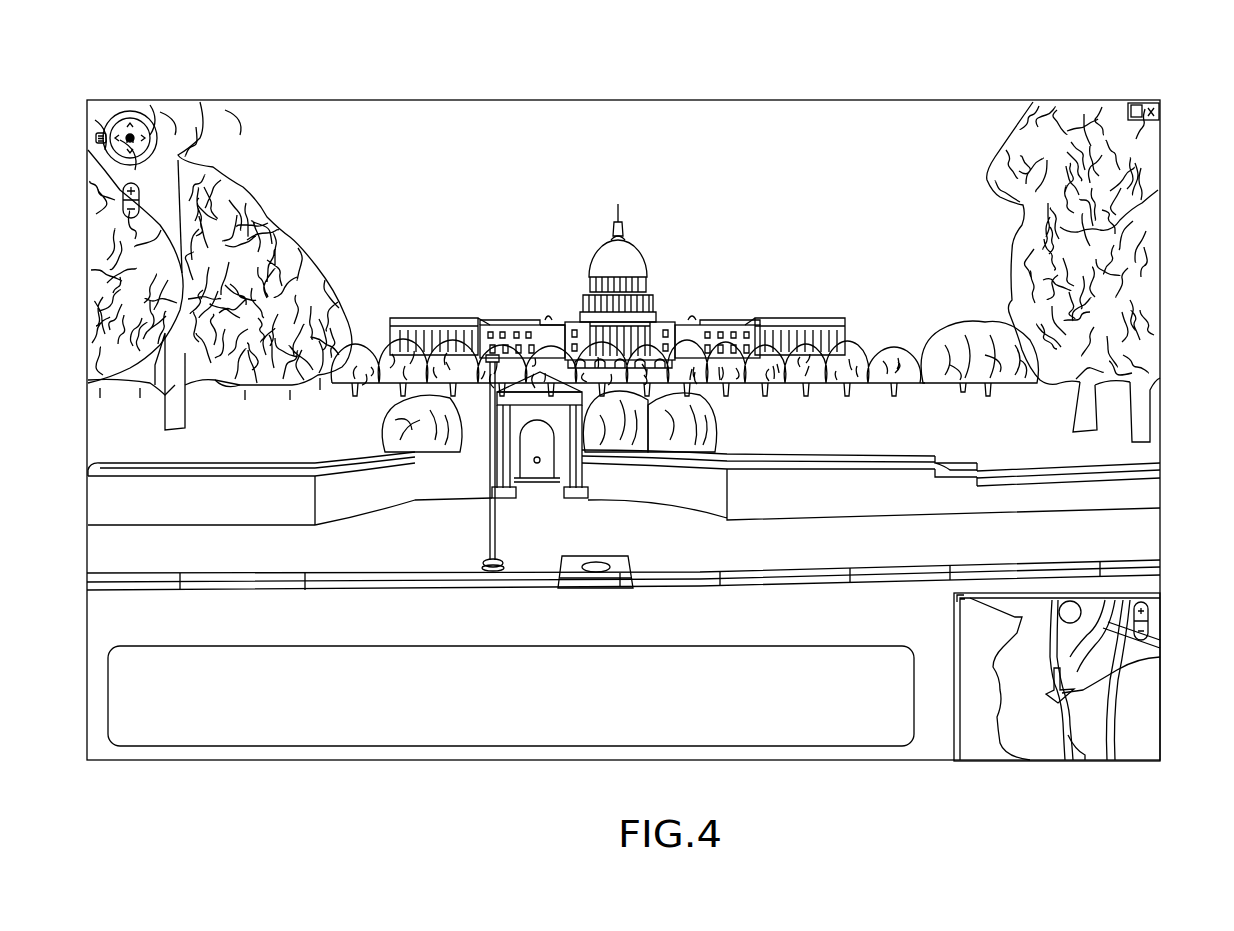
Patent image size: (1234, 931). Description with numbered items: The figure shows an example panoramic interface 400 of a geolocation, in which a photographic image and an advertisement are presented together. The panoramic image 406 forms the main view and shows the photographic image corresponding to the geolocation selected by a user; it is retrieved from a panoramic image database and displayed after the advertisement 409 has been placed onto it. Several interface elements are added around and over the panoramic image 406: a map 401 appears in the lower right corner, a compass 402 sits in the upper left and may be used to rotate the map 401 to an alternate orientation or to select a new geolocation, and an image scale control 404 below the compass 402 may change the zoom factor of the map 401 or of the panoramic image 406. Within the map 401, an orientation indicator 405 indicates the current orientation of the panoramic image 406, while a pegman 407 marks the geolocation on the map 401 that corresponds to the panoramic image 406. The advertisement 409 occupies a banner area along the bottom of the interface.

The panoramic interface 400 is at (1226, 64).
The map 401 is at (990, 765).
The compass 402 is at (124, 114).
The image scale control 404 is at (123, 190).
The orientation indicator 405 is at (1063, 762).
The panoramic image 406 is at (928, 100).
The pegman 407 is at (1160, 657).
The advertisement 409 is at (292, 745).